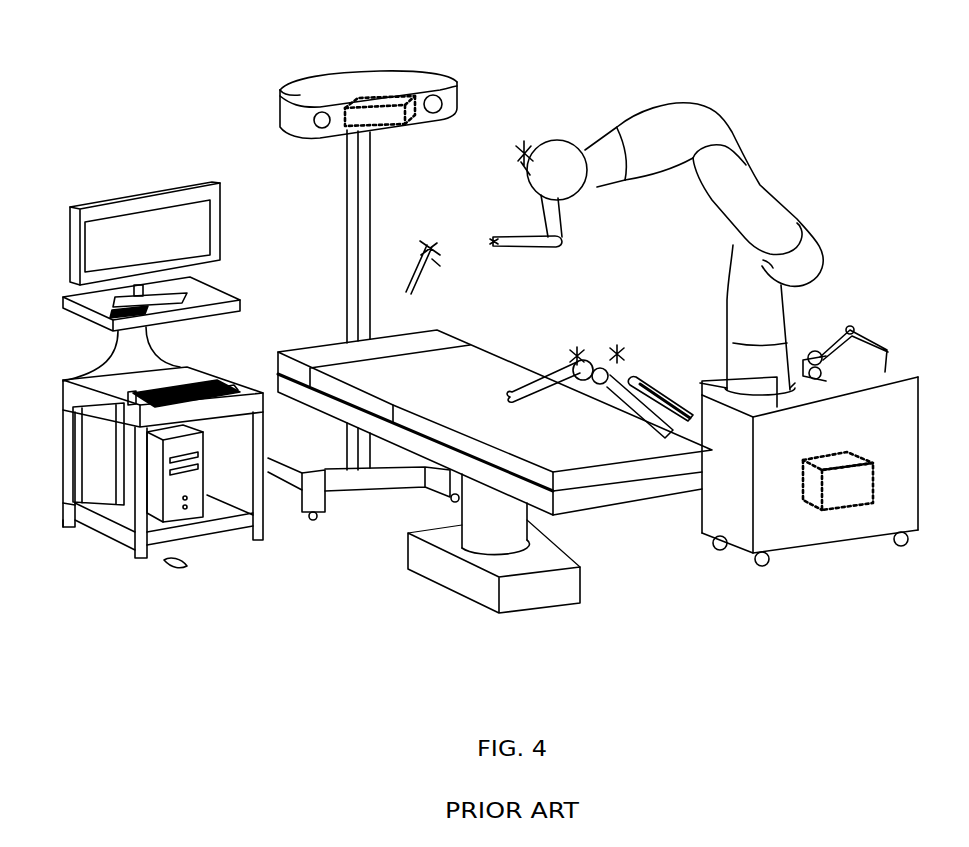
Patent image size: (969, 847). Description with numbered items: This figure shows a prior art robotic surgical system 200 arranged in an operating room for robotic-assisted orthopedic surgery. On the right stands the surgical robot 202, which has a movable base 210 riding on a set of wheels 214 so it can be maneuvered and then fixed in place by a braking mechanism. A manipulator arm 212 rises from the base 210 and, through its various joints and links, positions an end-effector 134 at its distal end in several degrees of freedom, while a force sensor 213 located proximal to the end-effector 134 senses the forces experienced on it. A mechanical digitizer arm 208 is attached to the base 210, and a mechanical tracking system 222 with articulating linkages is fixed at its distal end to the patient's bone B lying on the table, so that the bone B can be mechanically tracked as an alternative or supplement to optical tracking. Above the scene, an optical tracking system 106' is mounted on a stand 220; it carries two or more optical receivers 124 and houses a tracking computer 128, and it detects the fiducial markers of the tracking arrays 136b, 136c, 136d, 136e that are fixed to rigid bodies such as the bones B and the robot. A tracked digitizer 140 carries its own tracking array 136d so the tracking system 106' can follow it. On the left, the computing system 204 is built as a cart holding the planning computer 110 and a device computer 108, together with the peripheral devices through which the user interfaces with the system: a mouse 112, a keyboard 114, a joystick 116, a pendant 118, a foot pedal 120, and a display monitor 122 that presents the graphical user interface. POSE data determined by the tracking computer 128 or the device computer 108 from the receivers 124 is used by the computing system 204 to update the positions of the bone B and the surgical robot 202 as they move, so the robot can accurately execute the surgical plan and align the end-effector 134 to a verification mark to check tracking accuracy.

The surgical system 200 is at (142, 77).
The tracking system 106' is at (327, 105).
The optical receivers 124 is at (327, 117).
The tracking computer 128 is at (397, 126).
The stand 220 is at (347, 241).
The display monitor 122 is at (138, 196).
The pendant 118 is at (112, 316).
The keyboard 114 is at (183, 388).
The mouse 112 is at (228, 382).
The joystick 116 is at (134, 404).
The computing system 204 is at (98, 468).
The planning computer 110 is at (198, 519).
The foot pedal 120 is at (178, 573).
The tracking array 136d is at (430, 244).
The end-effector 134 is at (504, 243).
The tracked digitizer 140 is at (441, 295).
The tracking array 136e is at (527, 149).
The force sensor 213 is at (555, 208).
The manipulator arm 212 is at (762, 186).
The surgical robot 202 is at (840, 224).
The mechanical digitizer arm 208 is at (881, 318).
The tracking array 136c is at (572, 355).
The tracking array 136b is at (616, 349).
The mechanical tracking system 222 is at (665, 382).
The bone B is at (632, 400).
The movable base 210 is at (700, 507).
The wheels 214 is at (757, 570).
The device computer 108 is at (846, 512).